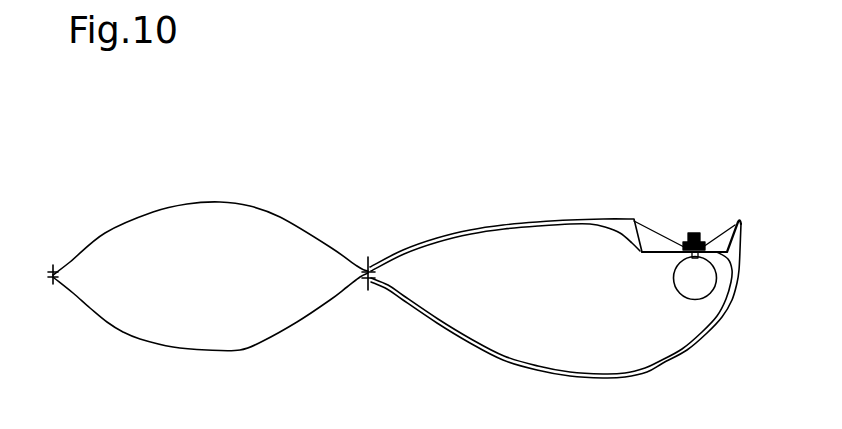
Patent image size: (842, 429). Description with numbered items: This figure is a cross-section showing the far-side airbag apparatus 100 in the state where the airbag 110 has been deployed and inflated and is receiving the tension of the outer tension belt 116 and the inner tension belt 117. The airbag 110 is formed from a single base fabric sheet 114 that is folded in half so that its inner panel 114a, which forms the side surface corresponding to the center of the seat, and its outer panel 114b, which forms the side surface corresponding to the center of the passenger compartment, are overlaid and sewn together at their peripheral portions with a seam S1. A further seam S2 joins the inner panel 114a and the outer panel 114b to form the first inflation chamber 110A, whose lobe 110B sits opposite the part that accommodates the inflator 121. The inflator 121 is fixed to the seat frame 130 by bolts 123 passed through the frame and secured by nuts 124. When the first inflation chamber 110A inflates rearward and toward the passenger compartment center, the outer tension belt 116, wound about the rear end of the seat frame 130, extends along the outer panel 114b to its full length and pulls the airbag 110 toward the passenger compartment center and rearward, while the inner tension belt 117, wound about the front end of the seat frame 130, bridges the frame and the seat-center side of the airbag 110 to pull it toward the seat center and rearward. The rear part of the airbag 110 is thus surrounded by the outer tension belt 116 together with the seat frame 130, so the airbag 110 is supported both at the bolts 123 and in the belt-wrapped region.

The far-side airbag apparatus 100 is at (758, 243).
The airbag 110 is at (403, 378).
The first inflation chamber 110A is at (569, 322).
The left lens 110B is at (237, 268).
The base fabric sheet 114 is at (222, 146).
The inner panel 114a is at (183, 201).
The outer panel 114b is at (107, 320).
The outer tension belt 116 is at (500, 369).
The inner tension belt 117 is at (508, 221).
The inflator 121 is at (702, 300).
The bolt 123 is at (693, 233).
The nut 124 is at (703, 245).
The seat frame 130 is at (652, 246).
The seam S1 is at (50, 285).
The seam S2 is at (366, 263).